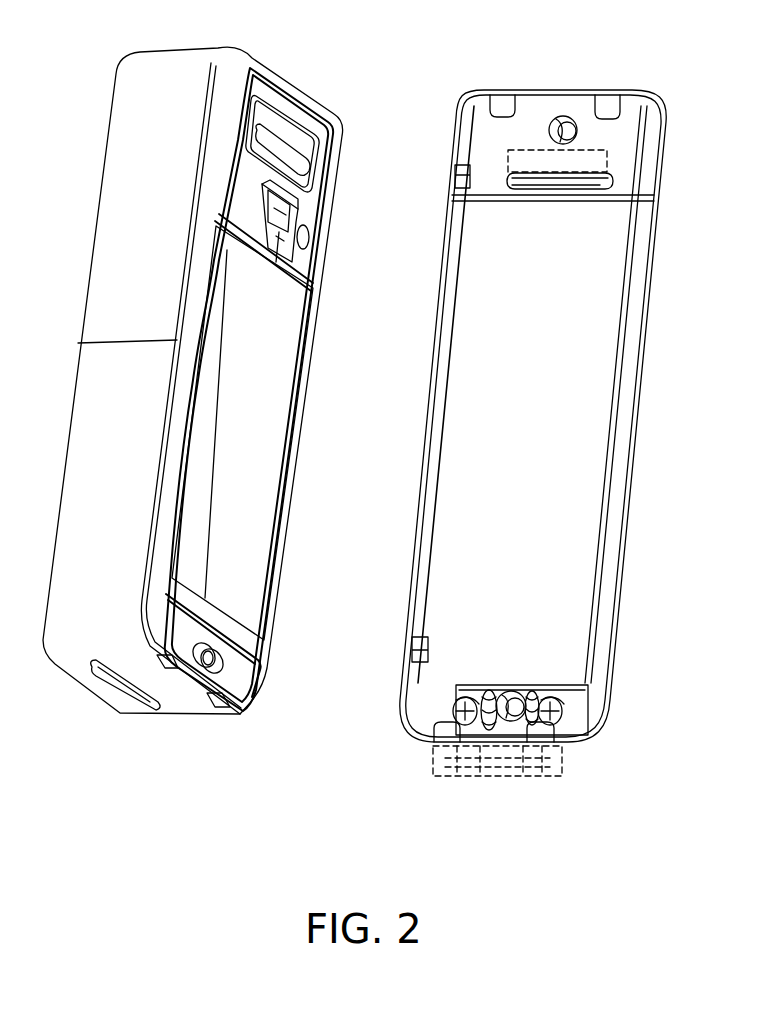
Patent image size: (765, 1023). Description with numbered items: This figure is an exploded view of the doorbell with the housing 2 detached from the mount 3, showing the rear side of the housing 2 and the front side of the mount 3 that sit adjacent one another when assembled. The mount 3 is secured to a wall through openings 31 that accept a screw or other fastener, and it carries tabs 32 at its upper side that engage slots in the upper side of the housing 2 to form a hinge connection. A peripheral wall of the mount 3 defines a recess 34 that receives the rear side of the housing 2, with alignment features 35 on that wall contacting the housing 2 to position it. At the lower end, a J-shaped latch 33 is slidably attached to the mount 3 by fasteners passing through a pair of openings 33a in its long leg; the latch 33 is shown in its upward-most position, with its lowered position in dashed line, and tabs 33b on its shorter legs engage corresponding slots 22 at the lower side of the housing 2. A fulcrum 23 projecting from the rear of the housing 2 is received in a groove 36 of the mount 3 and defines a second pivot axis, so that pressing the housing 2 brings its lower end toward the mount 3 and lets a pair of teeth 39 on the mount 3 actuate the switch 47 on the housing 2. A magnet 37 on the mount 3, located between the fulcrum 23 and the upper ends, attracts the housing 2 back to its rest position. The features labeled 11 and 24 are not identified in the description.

The housing 2 is at (100, 293).
The mount 3 is at (635, 392).
The slot 11 is at (123, 697).
The slots 22 is at (165, 673).
The fulcrum 23 is at (278, 147).
The panel 24 is at (215, 450).
The openings 31 is at (558, 117).
The tabs 32 is at (502, 100).
The latch 33 is at (480, 745).
The openings 33a is at (468, 688).
The tabs 33b is at (538, 748).
The recess 34 is at (437, 455).
The alignment features 35 is at (458, 172).
The groove 36 is at (605, 182).
The magnet 37 is at (582, 157).
The teeth 39 is at (500, 690).
The switch 47 is at (195, 667).